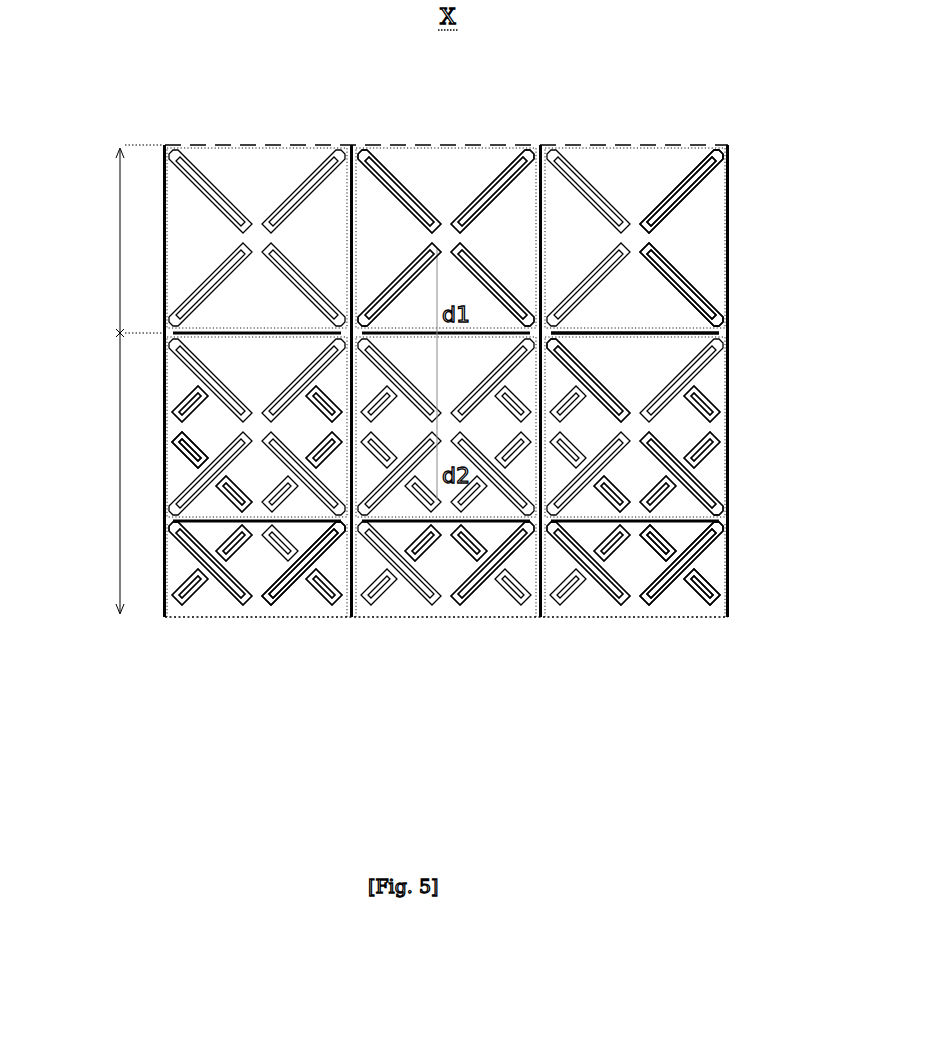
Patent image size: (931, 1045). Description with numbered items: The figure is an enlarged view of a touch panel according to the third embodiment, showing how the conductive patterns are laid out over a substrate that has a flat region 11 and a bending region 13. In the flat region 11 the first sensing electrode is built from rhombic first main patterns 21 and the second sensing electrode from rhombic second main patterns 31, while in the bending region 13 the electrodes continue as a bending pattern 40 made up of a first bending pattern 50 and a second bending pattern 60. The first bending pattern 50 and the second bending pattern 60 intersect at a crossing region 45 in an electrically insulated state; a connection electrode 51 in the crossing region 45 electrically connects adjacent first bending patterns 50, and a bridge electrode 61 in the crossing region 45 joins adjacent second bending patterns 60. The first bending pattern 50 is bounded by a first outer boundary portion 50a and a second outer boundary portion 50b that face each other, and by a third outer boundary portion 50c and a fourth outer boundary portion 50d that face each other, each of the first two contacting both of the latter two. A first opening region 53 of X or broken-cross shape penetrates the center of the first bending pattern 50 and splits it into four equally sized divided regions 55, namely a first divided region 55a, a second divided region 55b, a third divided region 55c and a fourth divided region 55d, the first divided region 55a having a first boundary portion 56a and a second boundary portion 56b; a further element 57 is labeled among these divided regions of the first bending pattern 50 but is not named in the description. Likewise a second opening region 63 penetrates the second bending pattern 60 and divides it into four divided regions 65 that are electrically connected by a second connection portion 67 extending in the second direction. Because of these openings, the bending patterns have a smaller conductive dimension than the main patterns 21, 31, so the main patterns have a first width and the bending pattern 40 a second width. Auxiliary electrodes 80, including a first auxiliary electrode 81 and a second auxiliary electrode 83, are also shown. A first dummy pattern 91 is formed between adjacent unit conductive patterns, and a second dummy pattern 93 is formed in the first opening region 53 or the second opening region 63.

The flat region 11 is at (106, 242).
The bending region 13 is at (106, 473).
The first main pattern 21 is at (446, 215).
The second main pattern 31 is at (668, 329).
The bending pattern 40 is at (736, 600).
The crossing region 45 is at (278, 605).
The first bending pattern 50 is at (727, 617).
The first outer boundary portion 50a is at (257, 576).
The second outer boundary portion 50b is at (195, 440).
The third outer boundary portion 50c is at (228, 478).
The fourth outer boundary portion 50d is at (336, 543).
The connection electrode 51 is at (305, 605).
The first opening region 53 is at (497, 603).
The divided region 55 is at (410, 606).
The first divided region 55a is at (588, 608).
The second divided region 55b is at (682, 613).
The third divided region 55c is at (694, 550).
The fourth divided region 55d is at (703, 511).
The first boundary portion 56a is at (185, 582).
The second boundary portion 56b is at (240, 534).
The fourth slit 57 is at (455, 605).
The second bending pattern 60 is at (718, 577).
The bridge electrode 61 is at (670, 352).
The second opening region 63 is at (683, 440).
The divided region 65 is at (716, 473).
The second connection portion 67 is at (716, 493).
The auxiliary electrodes 80 is at (739, 238).
The first auxiliary electrode 81 is at (714, 260).
The second auxiliary electrode 83 is at (695, 189).
The first dummy pattern 91 is at (348, 385).
The second dummy pattern 93 is at (175, 468).